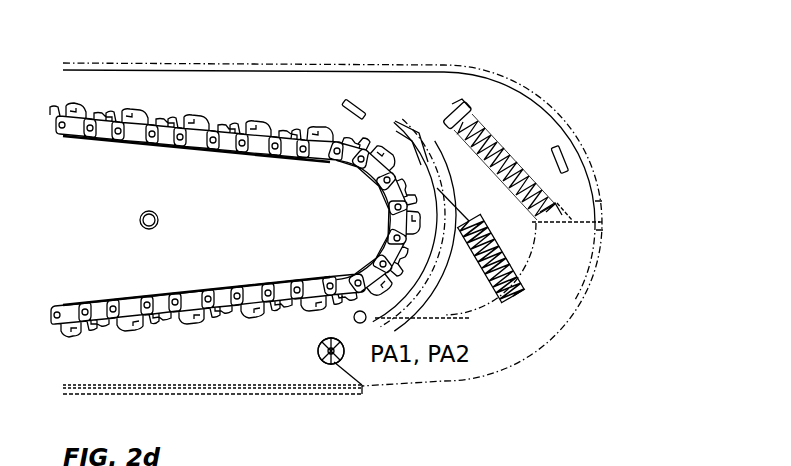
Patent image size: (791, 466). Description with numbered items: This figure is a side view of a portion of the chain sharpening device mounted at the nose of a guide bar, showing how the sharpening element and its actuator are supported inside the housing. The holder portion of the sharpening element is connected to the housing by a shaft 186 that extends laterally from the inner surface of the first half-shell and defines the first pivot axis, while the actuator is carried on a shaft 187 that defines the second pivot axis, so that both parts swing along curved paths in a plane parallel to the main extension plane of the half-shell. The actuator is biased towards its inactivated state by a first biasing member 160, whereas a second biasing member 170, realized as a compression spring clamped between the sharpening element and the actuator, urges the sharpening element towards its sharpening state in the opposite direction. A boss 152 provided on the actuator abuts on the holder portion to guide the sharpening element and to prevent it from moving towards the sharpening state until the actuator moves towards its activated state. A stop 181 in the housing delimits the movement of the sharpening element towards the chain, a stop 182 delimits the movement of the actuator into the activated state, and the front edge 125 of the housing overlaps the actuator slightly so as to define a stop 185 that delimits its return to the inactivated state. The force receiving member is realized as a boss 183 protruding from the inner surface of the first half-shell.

The front edge 125 is at (606, 204).
The boss 152 is at (353, 318).
The first biasing member 160 is at (492, 148).
The second biasing member 170 is at (500, 248).
The stop 181 is at (352, 104).
The stop 182 is at (568, 157).
The force receiving member 183 is at (478, 110).
The stop 185 is at (628, 234).
The shaft 186 is at (330, 363).
The shaft 187 is at (331, 351).